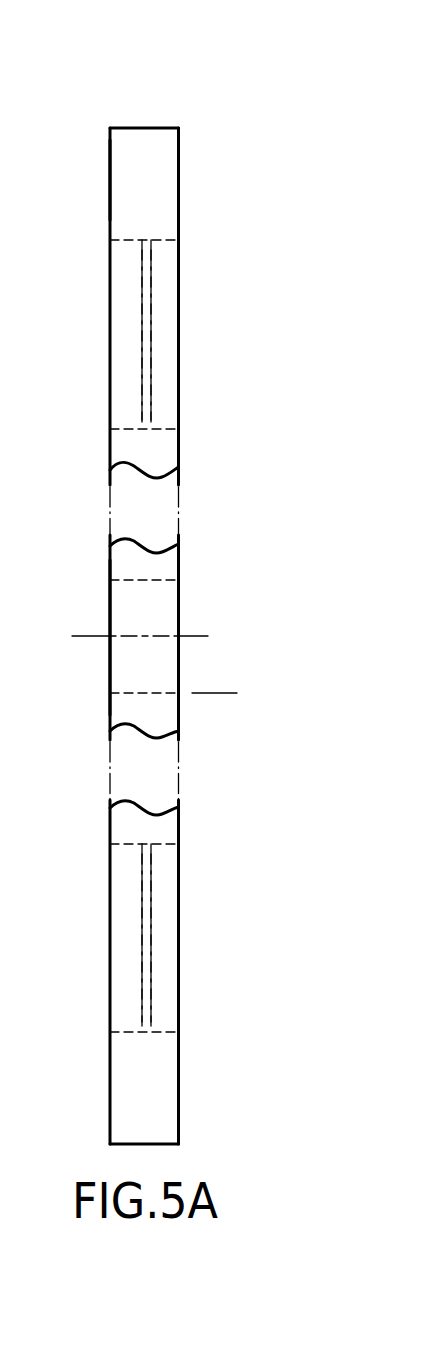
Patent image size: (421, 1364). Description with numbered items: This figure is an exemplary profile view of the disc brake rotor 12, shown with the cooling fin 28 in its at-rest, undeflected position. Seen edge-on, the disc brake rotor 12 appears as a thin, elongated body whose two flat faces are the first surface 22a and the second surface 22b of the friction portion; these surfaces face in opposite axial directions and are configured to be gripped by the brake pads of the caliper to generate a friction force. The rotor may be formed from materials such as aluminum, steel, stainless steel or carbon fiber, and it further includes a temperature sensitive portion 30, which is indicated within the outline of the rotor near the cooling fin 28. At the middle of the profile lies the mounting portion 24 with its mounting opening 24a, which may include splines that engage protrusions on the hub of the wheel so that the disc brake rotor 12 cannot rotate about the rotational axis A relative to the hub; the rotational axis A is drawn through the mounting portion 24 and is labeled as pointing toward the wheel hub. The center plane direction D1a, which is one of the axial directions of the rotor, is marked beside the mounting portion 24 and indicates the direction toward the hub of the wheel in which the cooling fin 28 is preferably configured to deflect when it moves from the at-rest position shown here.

The disc brake rotor 12 is at (133, 101).
The first surface 22a is at (109, 174).
The second surface 22b is at (179, 174).
The mounting portion 24 is at (108, 707).
The mounting opening 24a is at (145, 580).
The cooling fin 28 is at (126, 330).
The temperature sensitive portion 30 is at (148, 301).
The center plane direction D1a is at (217, 695).
The rotational axis A is at (140, 624).